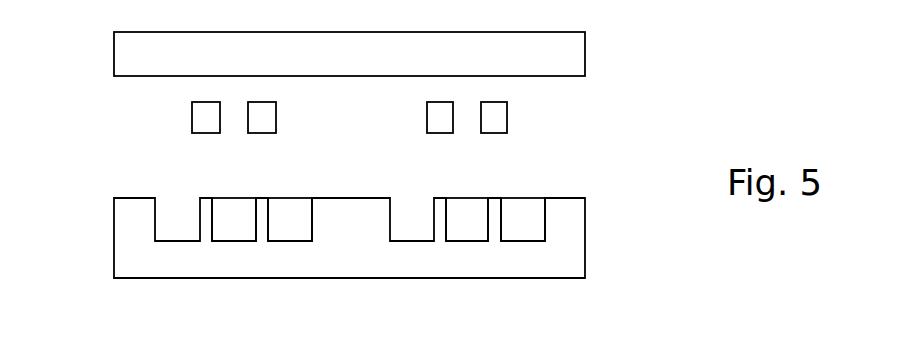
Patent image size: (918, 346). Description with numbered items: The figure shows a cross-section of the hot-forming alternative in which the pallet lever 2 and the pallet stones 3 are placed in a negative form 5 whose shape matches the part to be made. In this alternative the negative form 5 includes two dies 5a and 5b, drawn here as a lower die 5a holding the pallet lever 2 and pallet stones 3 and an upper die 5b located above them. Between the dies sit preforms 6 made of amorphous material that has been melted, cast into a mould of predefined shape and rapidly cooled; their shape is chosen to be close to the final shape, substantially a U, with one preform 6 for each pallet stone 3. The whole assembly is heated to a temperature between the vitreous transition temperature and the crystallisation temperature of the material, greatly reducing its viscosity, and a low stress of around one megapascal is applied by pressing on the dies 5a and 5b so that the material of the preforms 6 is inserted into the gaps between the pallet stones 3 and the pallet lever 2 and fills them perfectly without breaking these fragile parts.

The negative form 5 is at (107, 173).
The die 5a is at (573, 250).
The die 5b is at (578, 50).
The preform 6 is at (495, 117).
The pallet lever 2 is at (288, 205).
The pallet stones 3 is at (237, 211).